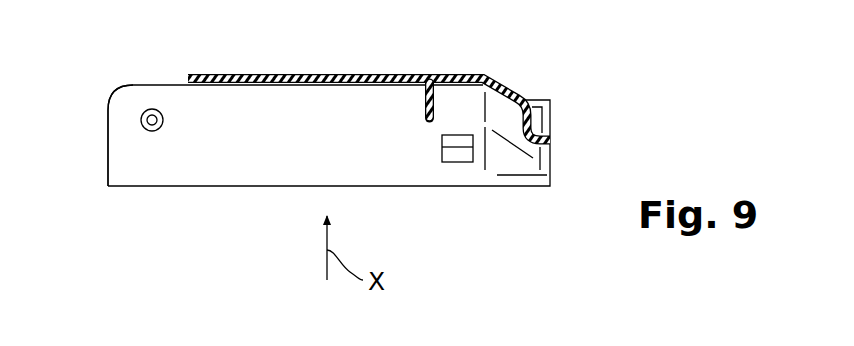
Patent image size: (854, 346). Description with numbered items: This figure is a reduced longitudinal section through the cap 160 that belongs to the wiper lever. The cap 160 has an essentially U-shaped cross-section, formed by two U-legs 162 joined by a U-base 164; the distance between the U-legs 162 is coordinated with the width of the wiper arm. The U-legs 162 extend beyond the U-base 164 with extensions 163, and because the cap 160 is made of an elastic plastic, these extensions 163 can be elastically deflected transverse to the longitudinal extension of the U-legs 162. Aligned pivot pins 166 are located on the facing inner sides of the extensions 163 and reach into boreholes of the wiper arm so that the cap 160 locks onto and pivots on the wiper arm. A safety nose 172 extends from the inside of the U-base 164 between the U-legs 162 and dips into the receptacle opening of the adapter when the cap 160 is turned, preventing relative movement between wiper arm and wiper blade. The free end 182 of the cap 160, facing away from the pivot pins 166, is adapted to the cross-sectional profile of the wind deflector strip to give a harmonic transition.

The cap 160 is at (301, 139).
The U-legs 162 is at (262, 160).
The extensions 163 is at (135, 165).
The U-base 164 is at (305, 74).
The pivot pins 166 is at (152, 120).
The safety nose 172 is at (423, 107).
The free end 182 is at (536, 192).